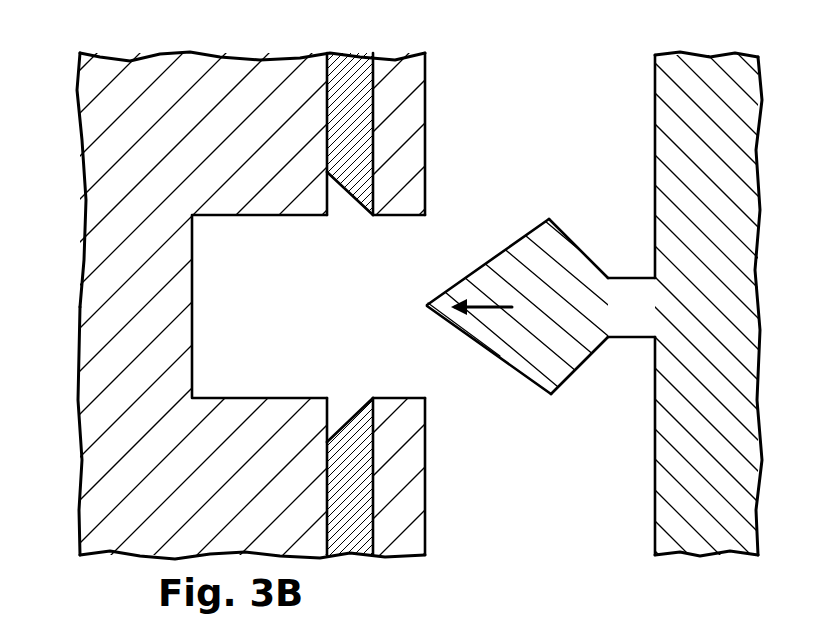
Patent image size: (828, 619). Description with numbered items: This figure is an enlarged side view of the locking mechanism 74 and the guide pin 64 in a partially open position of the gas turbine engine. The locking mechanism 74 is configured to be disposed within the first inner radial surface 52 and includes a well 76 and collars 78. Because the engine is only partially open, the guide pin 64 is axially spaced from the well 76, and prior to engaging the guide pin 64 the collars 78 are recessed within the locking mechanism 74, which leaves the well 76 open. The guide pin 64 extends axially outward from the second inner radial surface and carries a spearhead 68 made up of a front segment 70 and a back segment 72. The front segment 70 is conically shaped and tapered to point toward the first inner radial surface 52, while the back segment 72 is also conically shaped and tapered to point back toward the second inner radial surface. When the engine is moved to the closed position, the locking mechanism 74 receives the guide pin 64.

The first inner radial surface 52 is at (455, 66).
The locking mechanism 74 is at (454, 461).
The well 76 is at (193, 255).
The collars 78 is at (373, 99).
The guide pin 64 is at (622, 256).
The front segment 70 is at (500, 252).
The spearhead 68 is at (500, 356).
The back segment 72 is at (585, 362).